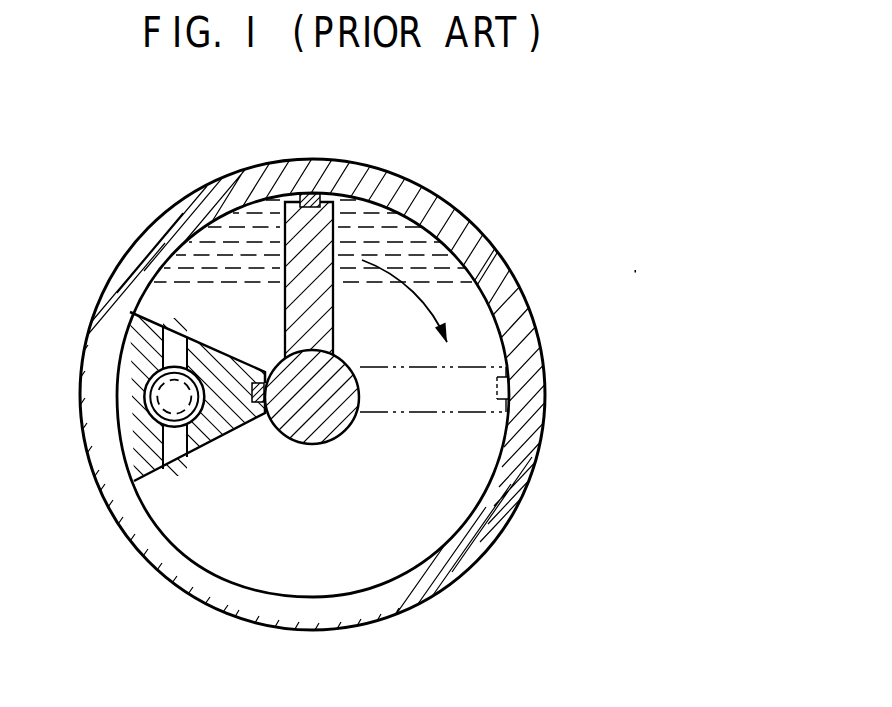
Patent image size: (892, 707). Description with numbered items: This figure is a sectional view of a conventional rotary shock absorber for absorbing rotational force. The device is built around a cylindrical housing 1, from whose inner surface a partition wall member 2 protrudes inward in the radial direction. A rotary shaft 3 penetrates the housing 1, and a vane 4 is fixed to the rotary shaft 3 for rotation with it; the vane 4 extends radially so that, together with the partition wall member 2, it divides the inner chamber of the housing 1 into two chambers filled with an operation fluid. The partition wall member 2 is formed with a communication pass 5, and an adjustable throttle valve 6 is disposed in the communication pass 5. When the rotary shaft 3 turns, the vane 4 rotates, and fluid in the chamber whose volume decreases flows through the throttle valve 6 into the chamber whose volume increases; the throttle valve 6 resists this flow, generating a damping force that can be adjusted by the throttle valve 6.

The cylindrical housing 1 is at (440, 212).
The partition wall member 2 is at (130, 455).
The rotary shaft 3 is at (318, 433).
The vane 4 is at (327, 330).
The communication pass 5 is at (165, 342).
The adjustable throttle valve 6 is at (174, 414).